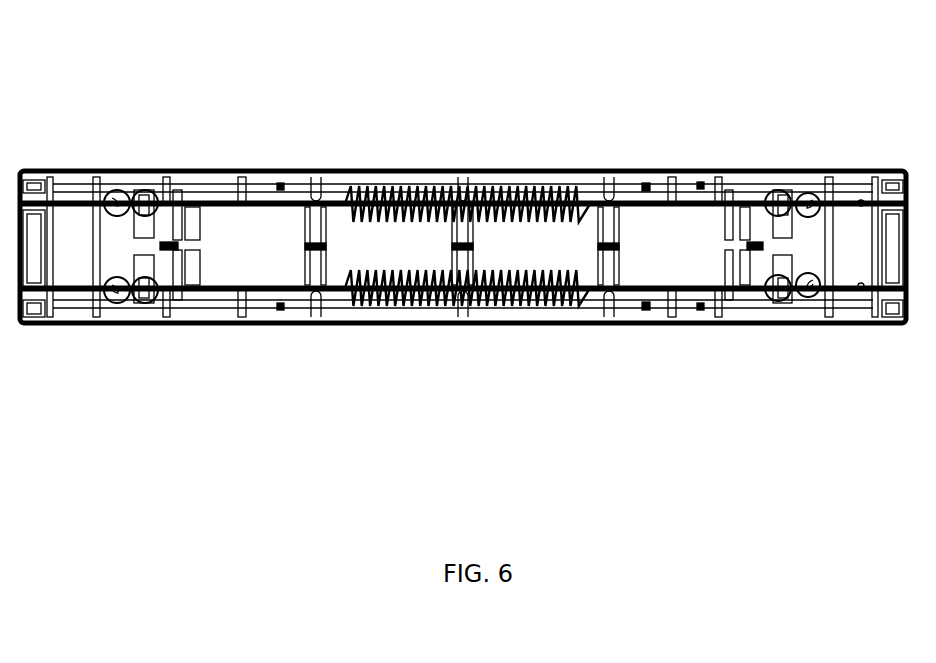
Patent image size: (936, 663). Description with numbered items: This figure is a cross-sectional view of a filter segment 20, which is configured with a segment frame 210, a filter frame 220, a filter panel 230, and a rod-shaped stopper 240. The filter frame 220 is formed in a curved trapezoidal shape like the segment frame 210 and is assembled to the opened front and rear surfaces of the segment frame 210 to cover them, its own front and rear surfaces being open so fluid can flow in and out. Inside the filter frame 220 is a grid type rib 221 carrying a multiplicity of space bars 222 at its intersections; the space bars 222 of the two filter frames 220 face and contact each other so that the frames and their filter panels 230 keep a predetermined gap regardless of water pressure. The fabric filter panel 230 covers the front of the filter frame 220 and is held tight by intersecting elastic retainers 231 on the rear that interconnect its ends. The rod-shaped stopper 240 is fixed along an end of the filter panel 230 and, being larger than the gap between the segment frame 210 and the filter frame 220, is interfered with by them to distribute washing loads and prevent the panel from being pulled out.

The filter segment 20 is at (427, 36).
The segment frame 210 is at (870, 256).
The filter frame 220 is at (897, 172).
The grid type rib 221 is at (702, 182).
The space bar 222 is at (312, 222).
The filter panel 230 is at (493, 222).
The elastic retainer 231 is at (588, 300).
The rod-shaped stopper 240 is at (858, 200).